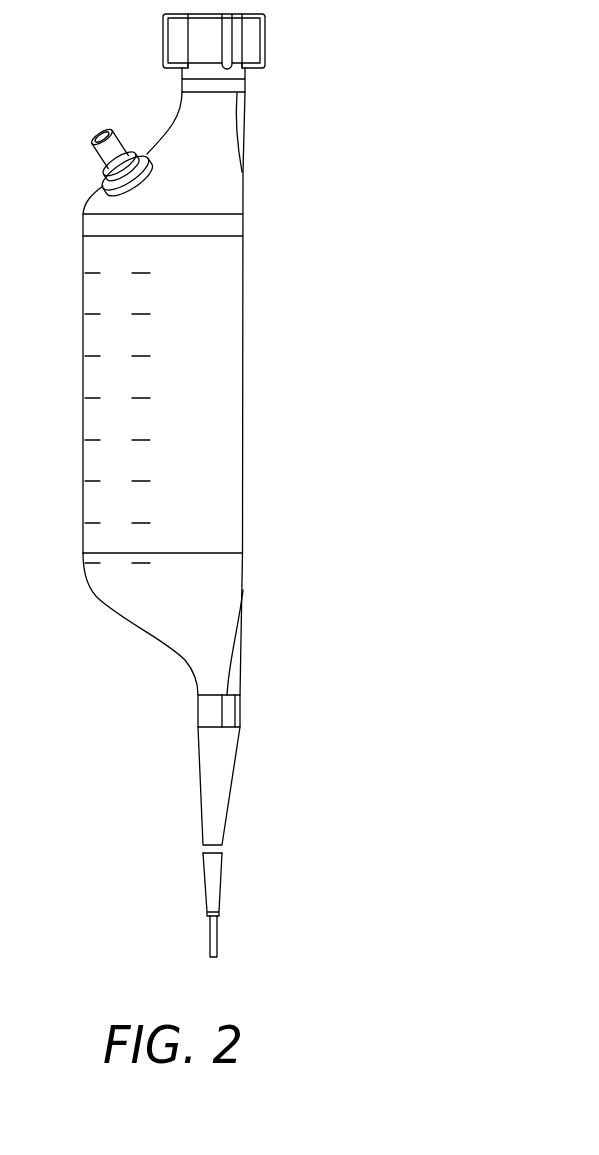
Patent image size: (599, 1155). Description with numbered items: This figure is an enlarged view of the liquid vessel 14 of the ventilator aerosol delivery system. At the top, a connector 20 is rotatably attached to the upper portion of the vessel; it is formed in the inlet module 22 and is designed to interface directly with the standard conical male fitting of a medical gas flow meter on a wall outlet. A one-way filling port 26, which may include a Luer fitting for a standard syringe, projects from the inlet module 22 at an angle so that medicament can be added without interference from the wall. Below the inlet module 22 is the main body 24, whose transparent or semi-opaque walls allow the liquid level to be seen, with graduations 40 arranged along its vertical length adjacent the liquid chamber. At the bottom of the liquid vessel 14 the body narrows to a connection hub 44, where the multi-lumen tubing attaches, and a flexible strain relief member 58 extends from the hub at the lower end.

The liquid vessel 14 is at (273, 385).
The connector 20 is at (265, 41).
The inlet module 22 is at (242, 150).
The main body 24 is at (237, 441).
The one-way filling port 26 is at (93, 133).
The graduations 40 is at (92, 312).
The connection hub 44 is at (203, 790).
The strain relief member 58 is at (215, 880).